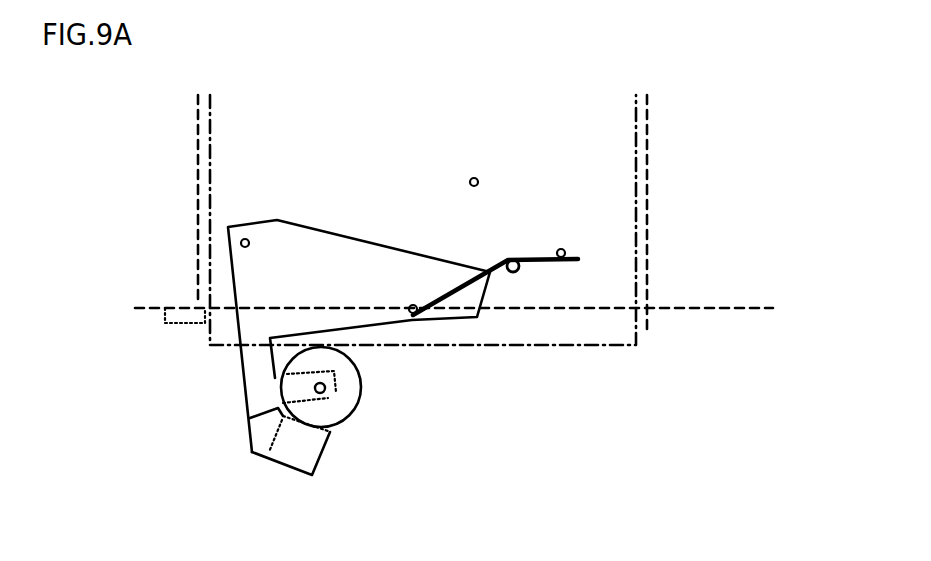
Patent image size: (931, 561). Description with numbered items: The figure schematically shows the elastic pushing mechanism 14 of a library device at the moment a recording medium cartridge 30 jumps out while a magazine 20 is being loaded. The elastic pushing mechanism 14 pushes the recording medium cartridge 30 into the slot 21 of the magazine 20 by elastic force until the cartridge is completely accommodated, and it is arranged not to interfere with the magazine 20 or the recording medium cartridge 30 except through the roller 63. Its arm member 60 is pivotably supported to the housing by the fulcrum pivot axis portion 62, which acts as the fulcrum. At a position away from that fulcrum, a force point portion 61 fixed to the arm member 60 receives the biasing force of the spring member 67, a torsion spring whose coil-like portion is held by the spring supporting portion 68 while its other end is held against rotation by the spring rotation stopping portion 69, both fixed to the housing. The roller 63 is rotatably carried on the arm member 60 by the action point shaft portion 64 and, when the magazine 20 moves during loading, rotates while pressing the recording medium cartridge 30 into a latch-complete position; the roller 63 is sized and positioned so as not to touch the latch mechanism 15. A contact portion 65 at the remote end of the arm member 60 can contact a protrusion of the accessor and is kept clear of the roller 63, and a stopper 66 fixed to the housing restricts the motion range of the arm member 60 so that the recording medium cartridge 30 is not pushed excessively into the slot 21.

The elastic pushing mechanism 14 is at (556, 182).
The latch mechanism 15 is at (182, 324).
The magazine 20 is at (737, 310).
The slot 21 is at (648, 200).
The recording medium cartridge 30 is at (520, 348).
The arm member 60 is at (250, 353).
The force point portion 61 is at (413, 304).
The fulcrum pivot axis portion 62 is at (244, 238).
The roller 63 is at (348, 376).
The action point shaft portion 64 is at (322, 392).
The contact portion 65 is at (294, 449).
The stopper 66 is at (477, 178).
The spring member 67 is at (452, 298).
The spring supporting portion 68 is at (519, 270).
The spring rotation stopping portion 69 is at (562, 249).